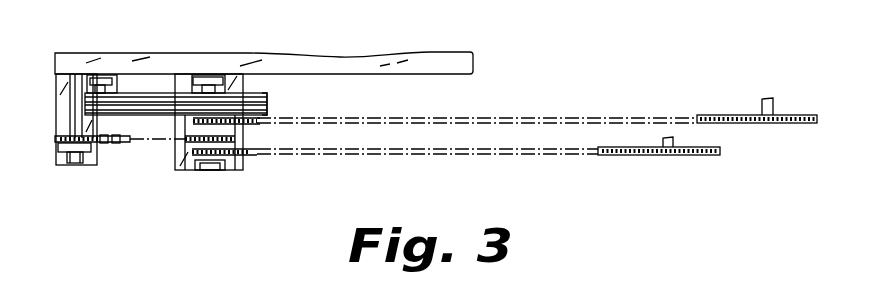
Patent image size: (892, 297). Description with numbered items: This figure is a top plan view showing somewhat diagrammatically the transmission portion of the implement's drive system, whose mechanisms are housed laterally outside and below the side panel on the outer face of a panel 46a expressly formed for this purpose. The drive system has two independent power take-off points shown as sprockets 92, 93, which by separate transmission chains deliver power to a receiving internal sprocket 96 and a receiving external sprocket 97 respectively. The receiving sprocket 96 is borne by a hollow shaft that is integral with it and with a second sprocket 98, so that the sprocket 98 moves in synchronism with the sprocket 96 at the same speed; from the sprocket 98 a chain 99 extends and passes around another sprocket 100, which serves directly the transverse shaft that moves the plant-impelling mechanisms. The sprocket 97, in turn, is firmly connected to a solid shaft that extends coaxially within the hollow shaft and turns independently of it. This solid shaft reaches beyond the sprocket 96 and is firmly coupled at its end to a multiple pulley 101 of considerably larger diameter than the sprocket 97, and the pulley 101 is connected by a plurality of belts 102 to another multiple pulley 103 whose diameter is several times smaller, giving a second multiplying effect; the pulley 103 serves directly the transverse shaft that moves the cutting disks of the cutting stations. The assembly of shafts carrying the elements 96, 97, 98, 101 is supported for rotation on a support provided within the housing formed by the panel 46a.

The panel 46a is at (423, 74).
The sprocket 92 is at (737, 114).
The sprocket 93 is at (720, 152).
The receiving internal sprocket 96 is at (186, 123).
The receiving external sprocket 97 is at (192, 160).
The second sprocket 98 is at (235, 139).
The chain 99 is at (128, 142).
The sprocket 100 is at (55, 140).
The multiple pulley 101 is at (268, 102).
The belts 102 is at (145, 98).
The multiple pulley 103 is at (112, 97).